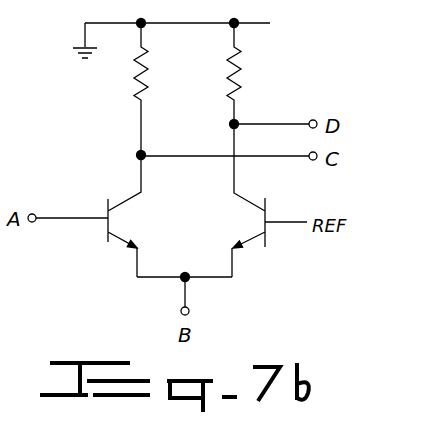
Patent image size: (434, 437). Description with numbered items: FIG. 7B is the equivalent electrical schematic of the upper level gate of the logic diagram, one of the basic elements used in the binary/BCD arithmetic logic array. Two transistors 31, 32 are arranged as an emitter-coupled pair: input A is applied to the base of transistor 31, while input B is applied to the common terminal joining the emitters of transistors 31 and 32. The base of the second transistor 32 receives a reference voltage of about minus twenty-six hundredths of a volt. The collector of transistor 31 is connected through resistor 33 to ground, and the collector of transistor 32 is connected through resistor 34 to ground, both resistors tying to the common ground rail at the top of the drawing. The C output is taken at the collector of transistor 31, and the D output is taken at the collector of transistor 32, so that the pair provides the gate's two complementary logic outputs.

The transistor 31 is at (118, 236).
The transistor 32 is at (250, 234).
The resistor 33 is at (143, 80).
The resistor 34 is at (236, 80).